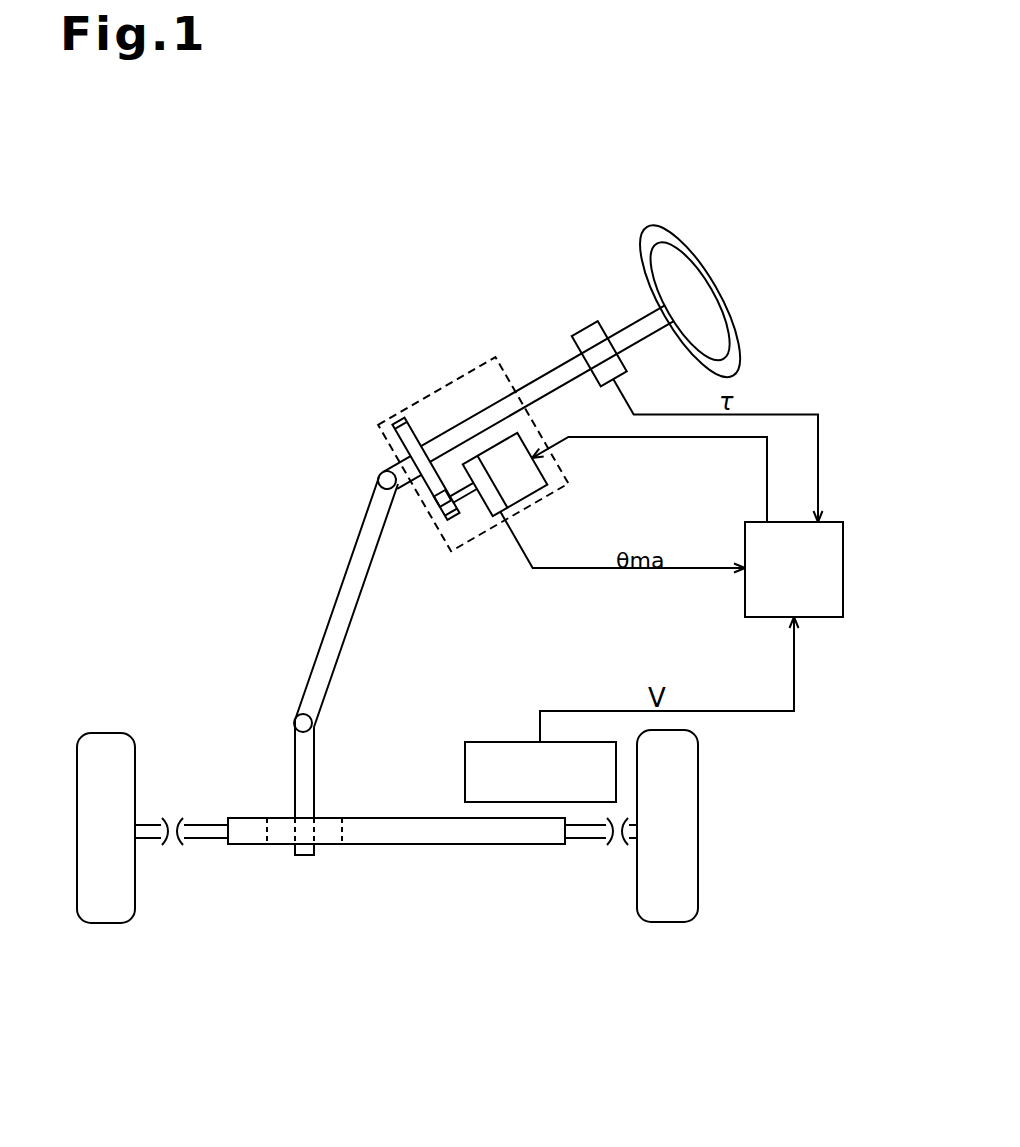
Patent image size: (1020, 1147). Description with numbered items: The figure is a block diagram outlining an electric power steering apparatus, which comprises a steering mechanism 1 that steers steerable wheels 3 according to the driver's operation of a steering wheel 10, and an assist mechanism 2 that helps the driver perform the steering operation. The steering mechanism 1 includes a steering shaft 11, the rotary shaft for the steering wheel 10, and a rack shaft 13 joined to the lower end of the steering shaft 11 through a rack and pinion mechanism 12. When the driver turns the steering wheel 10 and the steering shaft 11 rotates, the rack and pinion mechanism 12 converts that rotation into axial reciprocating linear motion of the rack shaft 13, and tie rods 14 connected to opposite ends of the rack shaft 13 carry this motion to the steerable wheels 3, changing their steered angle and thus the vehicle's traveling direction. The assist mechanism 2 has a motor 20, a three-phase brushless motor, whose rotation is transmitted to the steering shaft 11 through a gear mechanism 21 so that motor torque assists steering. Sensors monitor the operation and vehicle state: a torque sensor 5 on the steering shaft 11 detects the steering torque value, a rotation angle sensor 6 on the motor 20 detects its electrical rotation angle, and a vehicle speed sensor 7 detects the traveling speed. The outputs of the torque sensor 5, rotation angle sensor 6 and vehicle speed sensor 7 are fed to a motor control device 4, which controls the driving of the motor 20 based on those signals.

The steering mechanism 1 is at (269, 519).
The assist mechanism 2 is at (448, 383).
The steerable wheels 3 is at (77, 827).
The motor control device 4 is at (843, 566).
The torque sensor 5 is at (585, 330).
The rotation angle sensor 6 is at (490, 518).
The vehicle speed sensor 7 is at (493, 741).
The steering wheel 10 is at (723, 294).
The steering shaft 11 is at (350, 555).
The rack and pinion mechanism 12 is at (348, 826).
The rack shaft 13 is at (418, 818).
The tie rods 14 is at (203, 841).
The motor 20 is at (542, 475).
The gear mechanism 21 is at (425, 482).